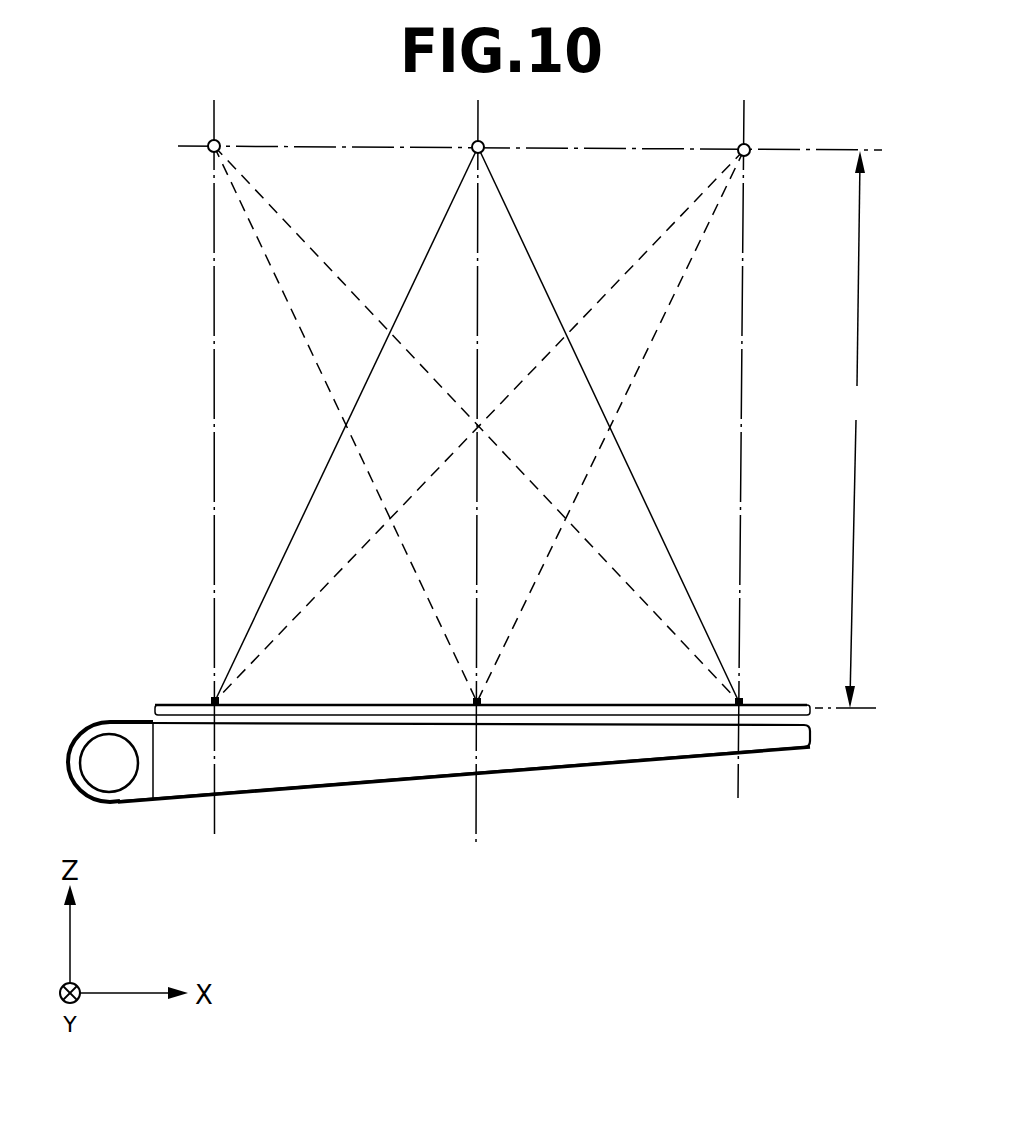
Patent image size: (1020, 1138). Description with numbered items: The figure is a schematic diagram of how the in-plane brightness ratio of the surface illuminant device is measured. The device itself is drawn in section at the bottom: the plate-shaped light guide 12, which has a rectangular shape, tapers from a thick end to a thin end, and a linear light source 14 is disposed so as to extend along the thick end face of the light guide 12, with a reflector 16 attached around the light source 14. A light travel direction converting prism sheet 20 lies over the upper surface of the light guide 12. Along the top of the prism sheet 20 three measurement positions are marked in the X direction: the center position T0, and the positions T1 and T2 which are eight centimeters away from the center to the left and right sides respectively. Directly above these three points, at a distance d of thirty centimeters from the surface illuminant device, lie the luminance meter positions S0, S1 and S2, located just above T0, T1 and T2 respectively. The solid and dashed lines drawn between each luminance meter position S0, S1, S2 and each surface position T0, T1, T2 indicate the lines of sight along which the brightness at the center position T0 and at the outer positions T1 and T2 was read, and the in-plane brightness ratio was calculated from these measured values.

The plate-shaped light guide 12 is at (328, 763).
The light source 14 is at (115, 772).
The reflector 16 is at (88, 720).
The light travel direction converting prism sheet 20 is at (351, 704).
The luminance meter position S0 is at (487, 140).
The luminance meter position S1 is at (222, 138).
The luminance meter position S2 is at (753, 147).
The center position T0 is at (482, 697).
The measurement position T1 is at (212, 697).
The measurement position T2 is at (744, 699).
The distance d is at (847, 429).